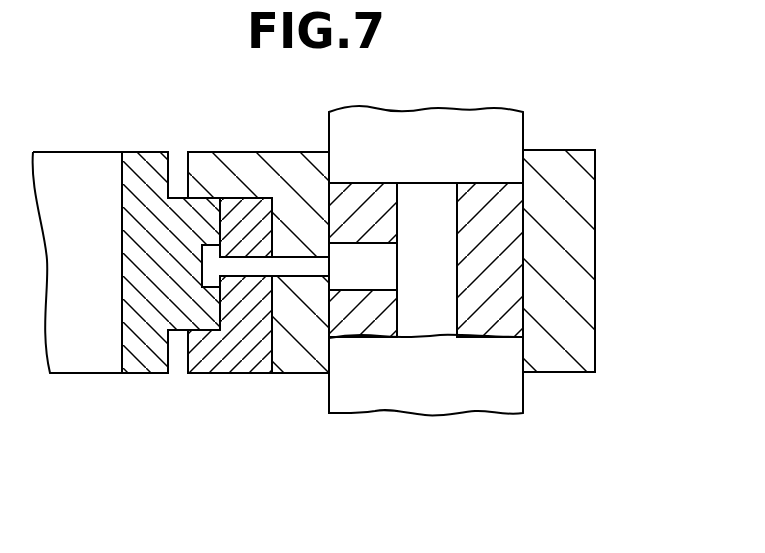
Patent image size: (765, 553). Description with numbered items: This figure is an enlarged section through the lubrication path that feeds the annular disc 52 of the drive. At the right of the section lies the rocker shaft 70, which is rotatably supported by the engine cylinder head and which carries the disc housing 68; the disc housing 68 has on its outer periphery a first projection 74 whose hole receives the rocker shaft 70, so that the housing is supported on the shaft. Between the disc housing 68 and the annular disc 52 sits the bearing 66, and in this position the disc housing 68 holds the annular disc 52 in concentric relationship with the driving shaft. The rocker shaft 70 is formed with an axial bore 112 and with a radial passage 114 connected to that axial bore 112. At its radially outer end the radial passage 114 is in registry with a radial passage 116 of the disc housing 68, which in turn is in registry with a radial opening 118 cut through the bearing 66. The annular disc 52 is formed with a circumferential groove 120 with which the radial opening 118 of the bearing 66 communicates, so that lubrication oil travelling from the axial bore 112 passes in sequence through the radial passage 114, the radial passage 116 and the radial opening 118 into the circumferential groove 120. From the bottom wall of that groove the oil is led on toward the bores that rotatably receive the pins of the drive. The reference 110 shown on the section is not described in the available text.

The annular disc 52 is at (140, 152).
The bearing 66 is at (215, 375).
The disc housing 68 is at (217, 152).
The rocker shaft 70 is at (515, 233).
The first projection 74 is at (570, 373).
The valve body 110 is at (447, 287).
The axial bore 112 is at (455, 210).
The radial passage 114 is at (378, 291).
The radial passage 116 is at (312, 257).
The radial opening 118 is at (260, 276).
The circumferential groove 120 is at (200, 274).